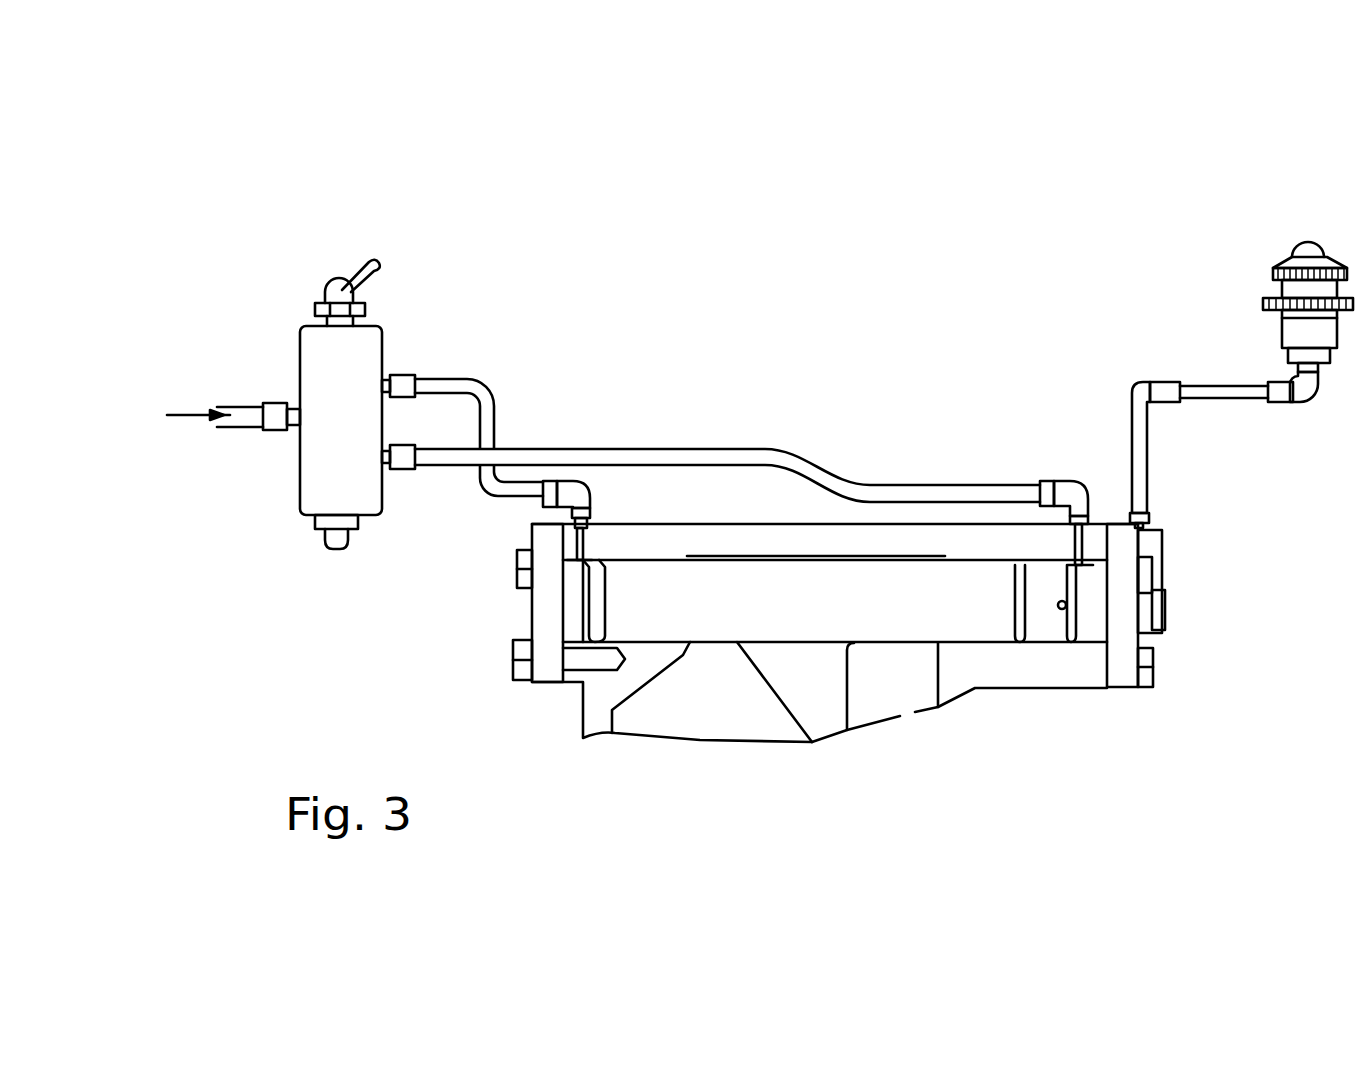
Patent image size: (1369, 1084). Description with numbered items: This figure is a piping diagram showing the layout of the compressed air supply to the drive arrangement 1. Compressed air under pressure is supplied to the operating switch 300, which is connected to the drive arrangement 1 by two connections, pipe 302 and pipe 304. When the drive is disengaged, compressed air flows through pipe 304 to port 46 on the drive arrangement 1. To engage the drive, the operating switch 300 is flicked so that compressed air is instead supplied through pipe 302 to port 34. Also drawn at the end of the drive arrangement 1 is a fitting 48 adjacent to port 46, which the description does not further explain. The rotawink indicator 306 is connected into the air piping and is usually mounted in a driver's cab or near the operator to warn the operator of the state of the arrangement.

The drive arrangement 1 is at (1062, 714).
The port 34 is at (583, 530).
The port 46 is at (1078, 550).
The nut / end fitting 48 is at (1143, 527).
The operating switch 300 is at (322, 488).
The pipe 302 is at (485, 393).
The pipe 304 is at (778, 458).
The rotawink indicator 306 is at (1284, 250).